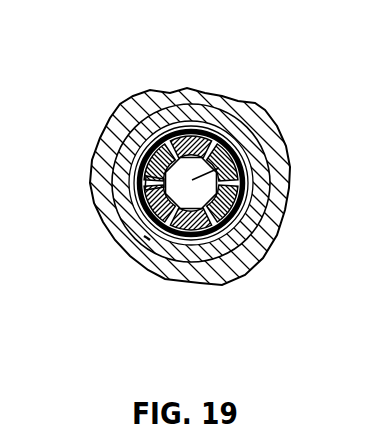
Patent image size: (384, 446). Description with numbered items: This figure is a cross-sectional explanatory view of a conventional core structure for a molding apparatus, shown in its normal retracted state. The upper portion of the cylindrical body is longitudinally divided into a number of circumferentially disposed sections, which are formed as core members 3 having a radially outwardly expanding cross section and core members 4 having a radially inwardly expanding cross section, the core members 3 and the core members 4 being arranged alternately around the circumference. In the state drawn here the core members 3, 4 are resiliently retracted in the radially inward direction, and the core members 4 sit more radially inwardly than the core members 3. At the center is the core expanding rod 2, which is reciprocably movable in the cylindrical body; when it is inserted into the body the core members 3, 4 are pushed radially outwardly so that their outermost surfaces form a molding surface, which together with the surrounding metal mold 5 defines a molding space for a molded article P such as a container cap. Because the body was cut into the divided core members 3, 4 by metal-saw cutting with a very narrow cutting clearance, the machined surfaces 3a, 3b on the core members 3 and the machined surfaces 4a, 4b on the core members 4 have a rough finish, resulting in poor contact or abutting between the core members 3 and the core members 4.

The core expanding rod 2 is at (255, 158).
The core member 3 is at (158, 163).
The machined surface 3a is at (170, 155).
The machined surface 3b is at (213, 150).
The core member 4 is at (157, 189).
The machined surface 4a is at (176, 214).
The machined surface 4b is at (152, 196).
The metal mold 5 is at (292, 190).
The molded article P is at (150, 232).